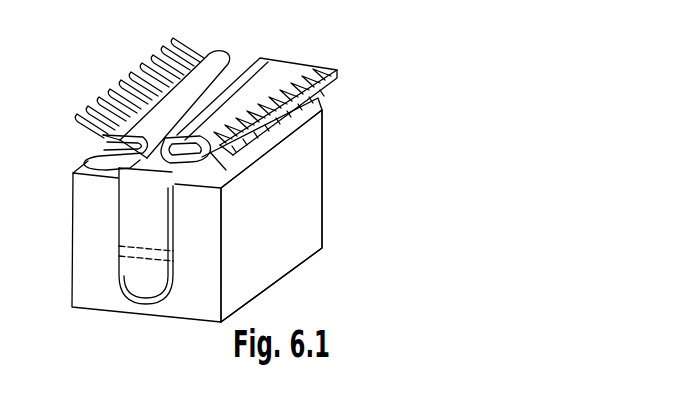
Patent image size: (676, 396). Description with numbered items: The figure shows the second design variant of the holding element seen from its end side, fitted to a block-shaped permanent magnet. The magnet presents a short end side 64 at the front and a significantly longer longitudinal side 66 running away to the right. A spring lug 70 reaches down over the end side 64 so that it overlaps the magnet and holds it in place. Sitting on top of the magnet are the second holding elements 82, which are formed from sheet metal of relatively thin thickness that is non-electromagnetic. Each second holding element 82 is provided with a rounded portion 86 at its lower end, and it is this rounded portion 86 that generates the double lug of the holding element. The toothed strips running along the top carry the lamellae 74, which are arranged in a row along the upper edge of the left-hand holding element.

The end side 64 is at (95, 240).
The longitudinal side 66 is at (277, 255).
The spring lug 70 is at (137, 202).
The contact lamellae 74 is at (88, 107).
The second holding element 82 is at (269, 65).
The rounded portion 86 is at (97, 146).